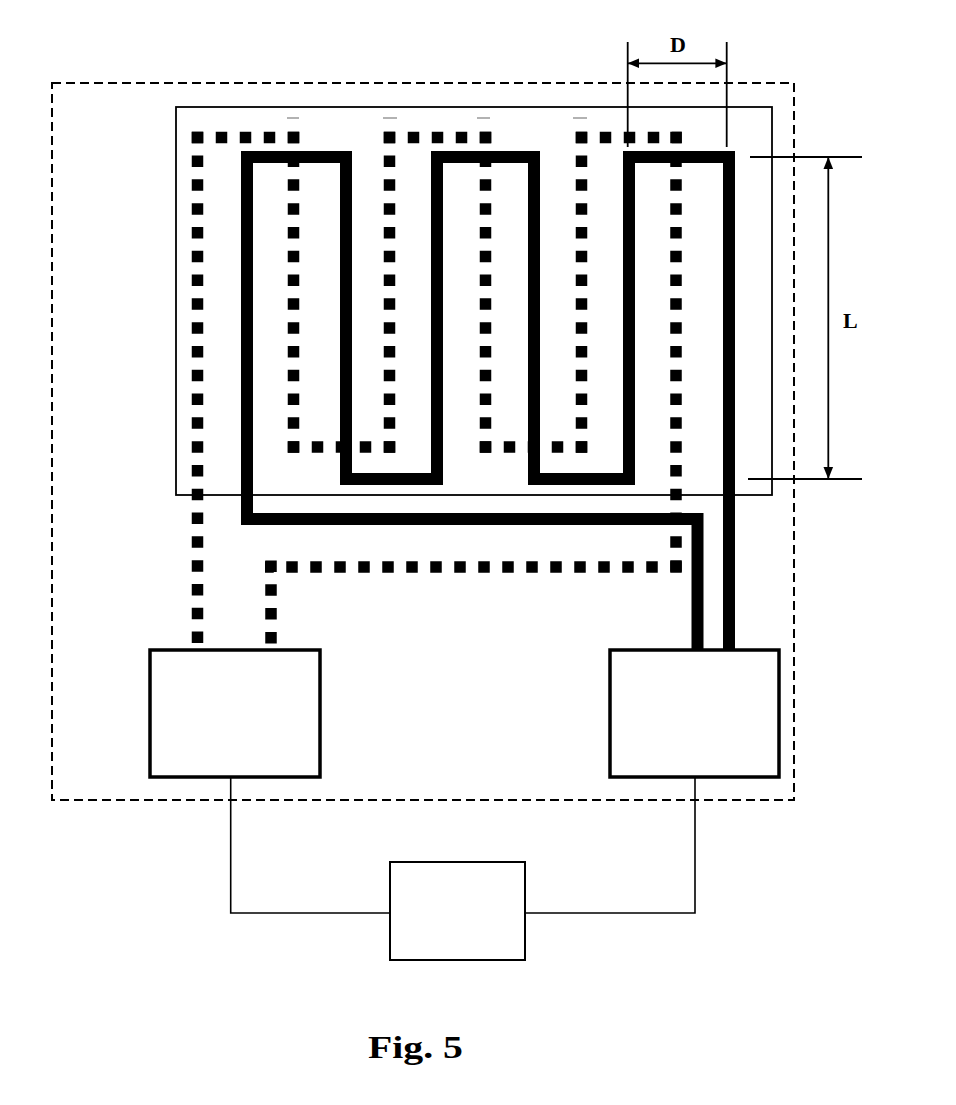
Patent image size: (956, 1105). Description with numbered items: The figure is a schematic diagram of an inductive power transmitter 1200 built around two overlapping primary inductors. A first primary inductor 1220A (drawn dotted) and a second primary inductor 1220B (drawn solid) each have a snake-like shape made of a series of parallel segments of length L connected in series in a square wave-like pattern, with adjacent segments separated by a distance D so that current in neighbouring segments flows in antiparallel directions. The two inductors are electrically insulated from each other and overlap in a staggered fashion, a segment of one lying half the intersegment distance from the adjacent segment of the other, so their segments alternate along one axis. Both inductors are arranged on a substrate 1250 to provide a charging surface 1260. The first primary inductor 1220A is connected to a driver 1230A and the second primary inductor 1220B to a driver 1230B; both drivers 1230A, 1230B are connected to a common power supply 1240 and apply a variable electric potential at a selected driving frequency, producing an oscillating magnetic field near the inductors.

The inductive power transmitter 1200 is at (128, 106).
The first primary inductor 1220A is at (193, 232).
The second primary inductor 1220B is at (242, 317).
The driver 1230A is at (150, 752).
The driver 1230B is at (610, 752).
The power supply 1240 is at (520, 935).
The substrate 1250 is at (453, 123).
The charging surface 1260 is at (347, 107).